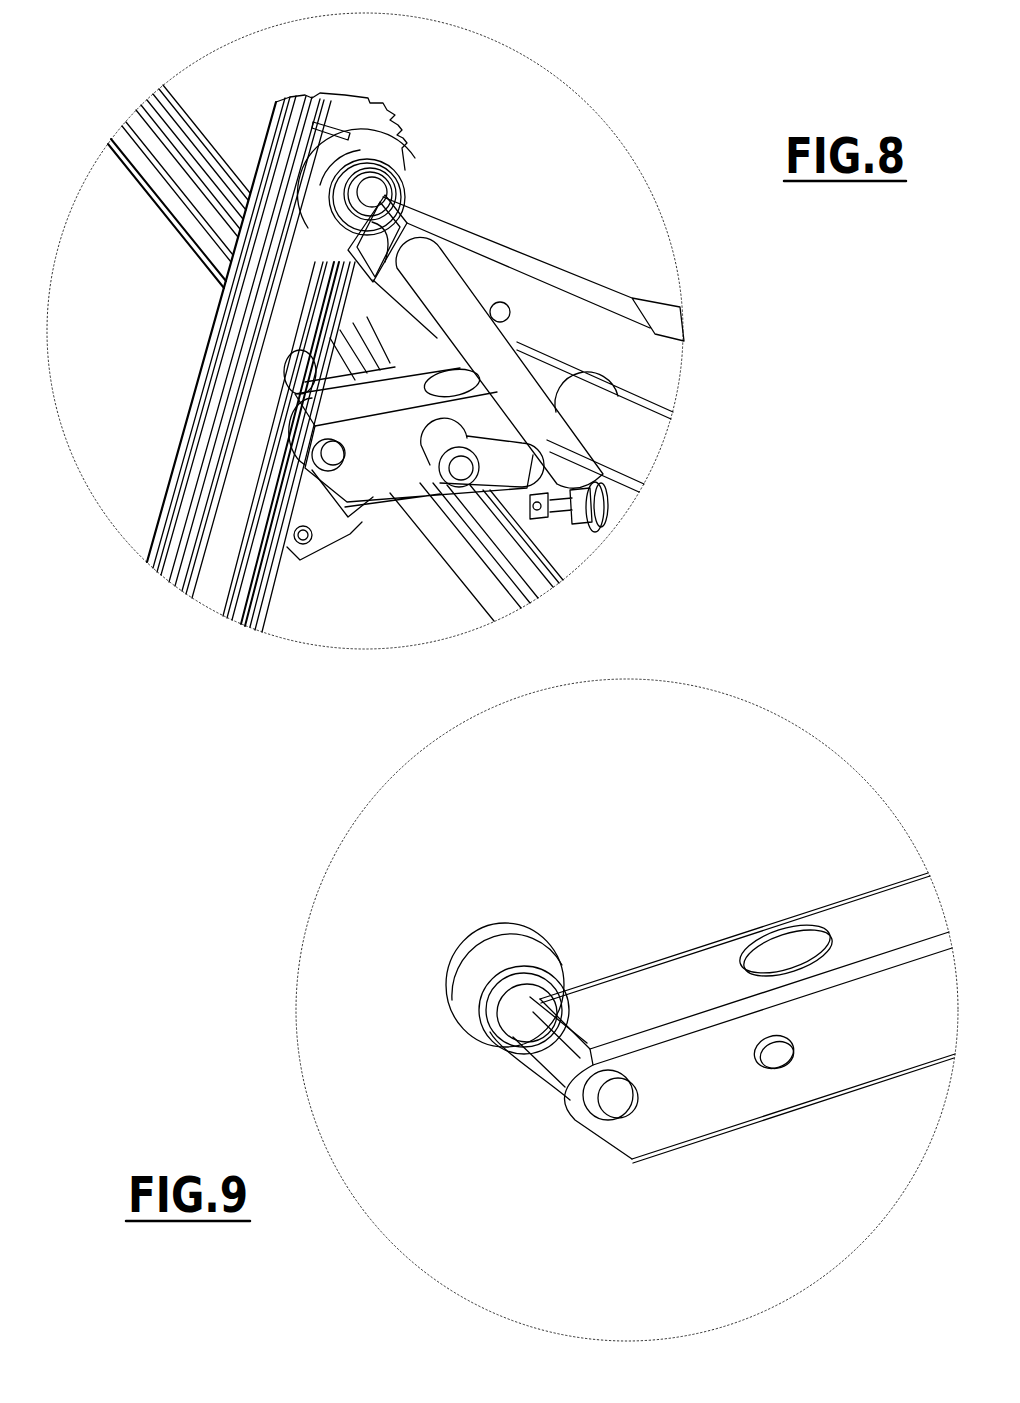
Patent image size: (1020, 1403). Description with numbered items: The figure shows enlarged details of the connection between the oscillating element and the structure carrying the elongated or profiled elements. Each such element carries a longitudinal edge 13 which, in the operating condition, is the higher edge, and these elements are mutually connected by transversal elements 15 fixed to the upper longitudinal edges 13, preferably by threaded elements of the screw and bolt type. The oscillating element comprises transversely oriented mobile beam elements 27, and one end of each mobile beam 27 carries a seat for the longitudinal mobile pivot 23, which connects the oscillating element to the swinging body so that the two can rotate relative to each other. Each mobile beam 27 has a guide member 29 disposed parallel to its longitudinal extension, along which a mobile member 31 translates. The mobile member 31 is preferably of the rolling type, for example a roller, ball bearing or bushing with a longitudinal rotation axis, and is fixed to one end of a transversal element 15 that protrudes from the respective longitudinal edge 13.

In FIG. 8, the longitudinal edge 13 is at (150, 138).
In FIG. 8, the transversal element 15 is at (387, 447).
In FIG. 9, the transversal element 15 is at (866, 923).
In FIG. 8, the longitudinal mobile pivot 23 is at (550, 440).
In FIG. 8, the mobile beam element 27 is at (200, 577).
In FIG. 8, the guide member 29 is at (270, 450).
In FIG. 8, the mobile member 31 is at (325, 335).
In FIG. 9, the mobile member 31 is at (463, 985).